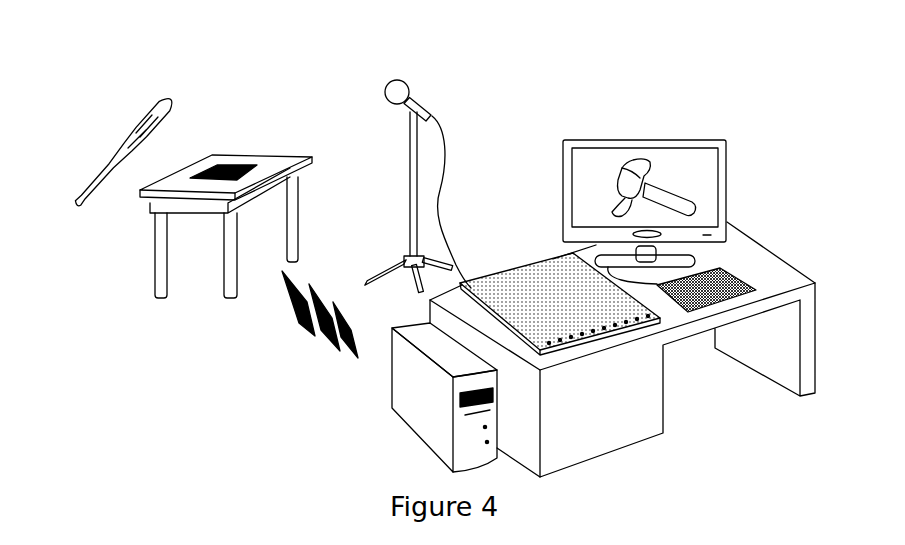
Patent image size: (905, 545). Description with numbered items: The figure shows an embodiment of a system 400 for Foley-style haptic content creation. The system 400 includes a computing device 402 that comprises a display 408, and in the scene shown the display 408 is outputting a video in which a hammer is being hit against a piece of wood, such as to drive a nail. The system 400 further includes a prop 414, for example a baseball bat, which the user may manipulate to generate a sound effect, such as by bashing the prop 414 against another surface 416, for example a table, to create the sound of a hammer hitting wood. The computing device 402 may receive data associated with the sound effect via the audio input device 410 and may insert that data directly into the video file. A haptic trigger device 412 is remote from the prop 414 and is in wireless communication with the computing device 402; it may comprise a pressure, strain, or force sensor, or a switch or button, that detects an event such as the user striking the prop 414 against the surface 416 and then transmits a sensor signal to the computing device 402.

The system 400 is at (93, 68).
The computing device 402 is at (422, 420).
The display 408 is at (706, 152).
The audio input device 410 is at (421, 77).
The haptic trigger device 412 is at (214, 153).
The prop 414 is at (88, 176).
The surface 416 is at (316, 150).